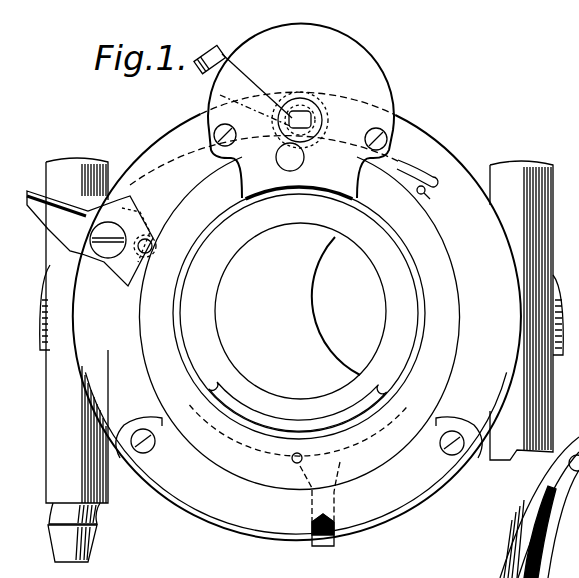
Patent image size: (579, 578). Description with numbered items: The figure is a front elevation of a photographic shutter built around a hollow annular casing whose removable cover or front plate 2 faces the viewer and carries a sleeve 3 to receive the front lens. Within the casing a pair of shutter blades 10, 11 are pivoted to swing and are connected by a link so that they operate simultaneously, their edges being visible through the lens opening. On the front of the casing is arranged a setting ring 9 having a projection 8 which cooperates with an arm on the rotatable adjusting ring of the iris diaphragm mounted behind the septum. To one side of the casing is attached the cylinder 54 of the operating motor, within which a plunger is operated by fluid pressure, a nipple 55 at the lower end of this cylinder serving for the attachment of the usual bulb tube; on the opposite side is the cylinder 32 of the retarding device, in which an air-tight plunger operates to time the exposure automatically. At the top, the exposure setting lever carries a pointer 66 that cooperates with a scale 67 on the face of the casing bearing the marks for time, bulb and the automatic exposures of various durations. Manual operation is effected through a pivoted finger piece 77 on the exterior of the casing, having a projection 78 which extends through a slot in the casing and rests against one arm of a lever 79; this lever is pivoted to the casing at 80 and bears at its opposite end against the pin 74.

The front plate 2 is at (30, 308).
The sleeve 3 is at (300, 323).
The projection 8 is at (294, 463).
The setting ring 9 is at (320, 504).
The blade 10 is at (300, 311).
The blade 11 is at (339, 306).
The cylinder 32 is at (526, 310).
The cylinder 54 is at (77, 330).
The nipple 55 is at (94, 542).
The pointer 66 is at (238, 38).
The scale 67 is at (375, 73).
The pin 74 is at (289, 175).
The finger piece 77 is at (90, 238).
The projection 78 is at (150, 250).
The lever 79 is at (173, 208).
The pivot 80 is at (289, 171).